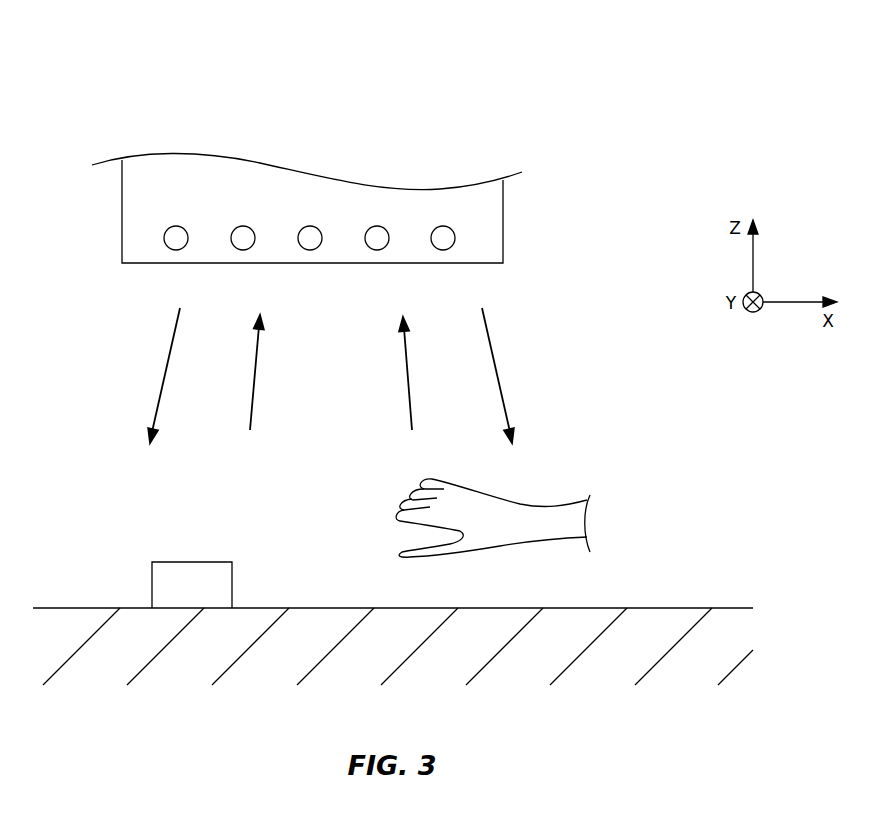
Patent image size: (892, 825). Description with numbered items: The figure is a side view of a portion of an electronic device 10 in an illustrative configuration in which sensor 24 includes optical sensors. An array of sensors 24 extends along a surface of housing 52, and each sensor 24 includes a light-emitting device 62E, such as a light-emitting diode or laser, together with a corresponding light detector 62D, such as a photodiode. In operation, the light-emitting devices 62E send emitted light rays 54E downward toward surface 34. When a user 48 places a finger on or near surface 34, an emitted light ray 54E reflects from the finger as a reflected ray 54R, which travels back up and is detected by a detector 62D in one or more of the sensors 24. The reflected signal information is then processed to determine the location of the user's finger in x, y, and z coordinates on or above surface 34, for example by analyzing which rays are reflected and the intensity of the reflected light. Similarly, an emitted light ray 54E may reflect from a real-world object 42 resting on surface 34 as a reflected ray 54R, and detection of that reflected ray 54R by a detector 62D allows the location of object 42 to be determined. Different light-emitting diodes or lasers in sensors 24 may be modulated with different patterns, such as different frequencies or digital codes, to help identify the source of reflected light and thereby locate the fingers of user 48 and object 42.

The device 10 is at (432, 97).
The sensor 24 is at (202, 193).
The housing 52 is at (492, 233).
The light-emitting device 62E is at (178, 226).
The light detector 62D is at (245, 226).
The emitted light ray 54E is at (165, 366).
The reflected ray 54R is at (253, 377).
The user 48 is at (520, 503).
The real-world object 42 is at (198, 562).
The surface 34 is at (665, 620).